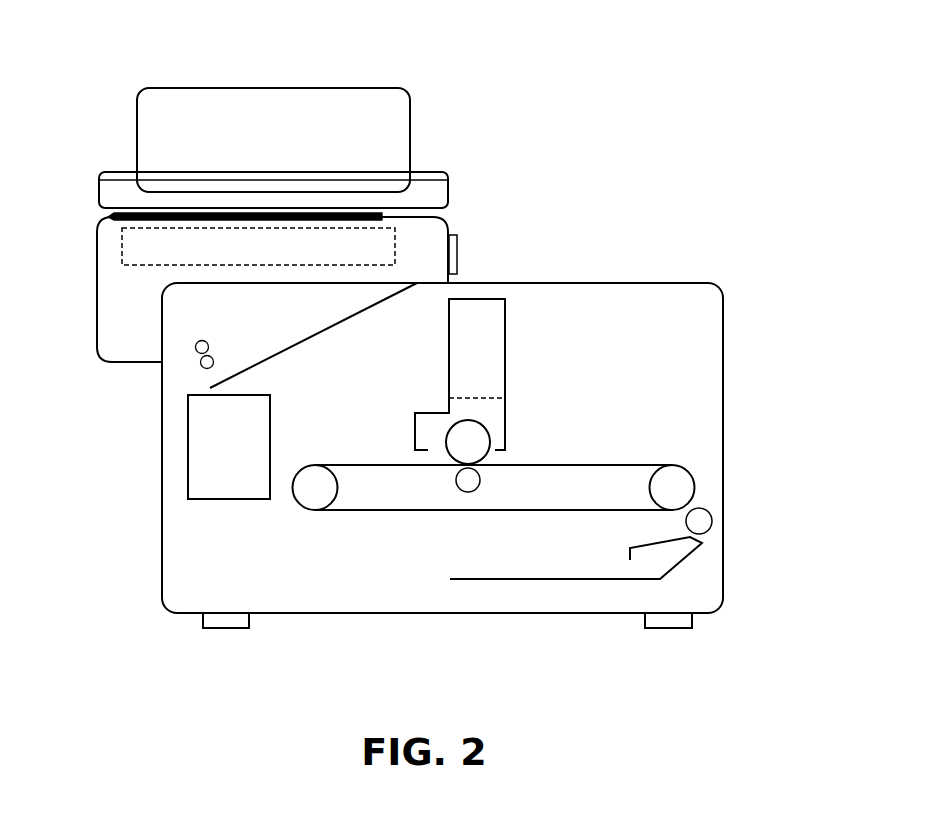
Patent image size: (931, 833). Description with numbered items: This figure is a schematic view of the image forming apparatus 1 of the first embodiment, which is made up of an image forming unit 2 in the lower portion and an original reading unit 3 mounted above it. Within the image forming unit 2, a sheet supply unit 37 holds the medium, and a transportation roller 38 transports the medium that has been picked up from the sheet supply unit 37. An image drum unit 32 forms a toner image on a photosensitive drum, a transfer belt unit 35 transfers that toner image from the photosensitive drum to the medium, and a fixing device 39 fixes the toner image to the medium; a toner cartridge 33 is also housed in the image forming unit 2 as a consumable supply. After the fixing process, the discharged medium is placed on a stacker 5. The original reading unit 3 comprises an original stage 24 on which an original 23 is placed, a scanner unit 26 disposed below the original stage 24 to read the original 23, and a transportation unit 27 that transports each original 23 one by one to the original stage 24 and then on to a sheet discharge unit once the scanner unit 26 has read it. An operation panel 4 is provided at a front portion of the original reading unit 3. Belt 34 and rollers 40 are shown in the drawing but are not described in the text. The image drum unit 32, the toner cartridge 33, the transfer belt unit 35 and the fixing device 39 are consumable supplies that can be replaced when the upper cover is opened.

The image forming apparatus 1 is at (689, 152).
The image forming unit 2 is at (680, 332).
The original reading unit 3 is at (120, 193).
The operation panel 4 is at (457, 238).
The stacker 5 is at (320, 329).
The original 23 is at (322, 216).
The original stage 24 is at (440, 205).
The scanner unit 26 is at (387, 227).
The transportation unit 27 is at (270, 100).
The image drum unit 32 is at (492, 415).
The toner cartridge 33 is at (476, 330).
The transfer belt 34 is at (617, 463).
The transfer belt unit 35 is at (325, 512).
The sheet supply unit 37 is at (685, 562).
The transportation roller 38 is at (700, 513).
The fixing device 39 is at (202, 485).
The discharge rollers 40 is at (197, 338).